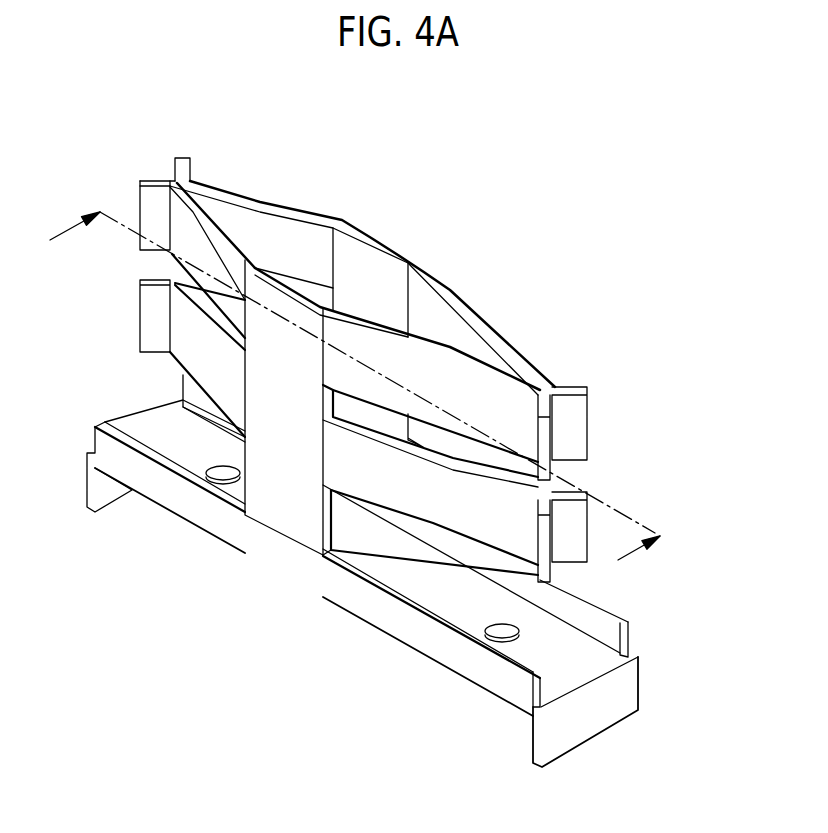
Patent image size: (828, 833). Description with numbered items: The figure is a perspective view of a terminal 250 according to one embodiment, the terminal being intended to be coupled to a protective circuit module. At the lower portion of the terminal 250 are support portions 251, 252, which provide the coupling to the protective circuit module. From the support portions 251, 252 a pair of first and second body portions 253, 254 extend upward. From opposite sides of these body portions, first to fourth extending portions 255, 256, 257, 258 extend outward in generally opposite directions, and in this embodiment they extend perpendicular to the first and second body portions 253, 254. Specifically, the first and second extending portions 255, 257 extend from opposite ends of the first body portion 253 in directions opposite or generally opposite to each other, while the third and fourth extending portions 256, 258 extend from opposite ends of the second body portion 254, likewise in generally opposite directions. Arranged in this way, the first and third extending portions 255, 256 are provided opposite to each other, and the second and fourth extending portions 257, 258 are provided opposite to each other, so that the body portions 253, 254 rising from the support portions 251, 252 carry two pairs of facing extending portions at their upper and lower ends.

The terminal 250 is at (574, 229).
The support portion 251 is at (410, 562).
The support portion 252 is at (578, 723).
The first body portion 253 is at (287, 497).
The second body portion 254 is at (393, 274).
The first extending portion 255 is at (366, 355).
The third extending portion 256 is at (463, 312).
The second extending portion 257 is at (200, 246).
The fourth extending portion 258 is at (253, 202).